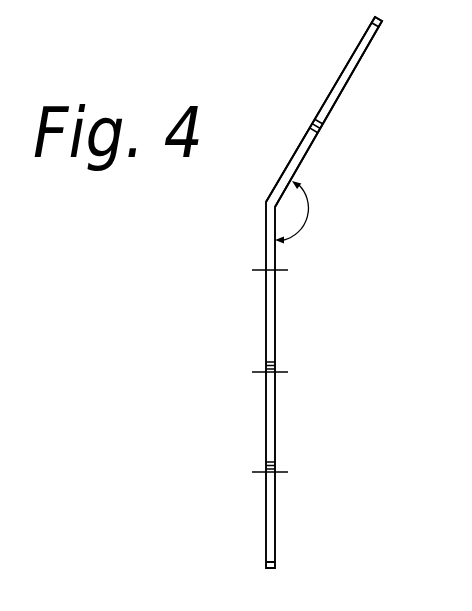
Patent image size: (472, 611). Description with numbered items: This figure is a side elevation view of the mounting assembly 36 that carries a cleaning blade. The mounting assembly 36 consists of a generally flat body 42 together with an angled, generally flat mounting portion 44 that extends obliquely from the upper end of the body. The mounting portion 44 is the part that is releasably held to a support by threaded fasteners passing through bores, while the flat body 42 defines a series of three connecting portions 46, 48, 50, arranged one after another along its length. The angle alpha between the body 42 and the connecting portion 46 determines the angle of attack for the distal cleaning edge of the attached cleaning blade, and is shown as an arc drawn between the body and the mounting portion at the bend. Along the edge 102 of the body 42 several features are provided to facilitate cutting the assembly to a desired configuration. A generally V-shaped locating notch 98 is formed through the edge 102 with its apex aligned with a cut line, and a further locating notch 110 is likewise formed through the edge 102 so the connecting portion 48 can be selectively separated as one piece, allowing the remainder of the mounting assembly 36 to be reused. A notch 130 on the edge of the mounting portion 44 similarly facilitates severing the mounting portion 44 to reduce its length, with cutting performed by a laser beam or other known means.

The mounting assembly 36 is at (333, 210).
The body 42 is at (263, 396).
The mounting portion 44 is at (314, 112).
The connecting portion 46 is at (273, 510).
The connecting portion 48 is at (270, 413).
The connecting portion 50 is at (270, 323).
The locating notch 98 is at (269, 459).
The edge 102 is at (268, 265).
The locating notch 110 is at (270, 362).
The notch 130 is at (323, 122).
The angle alpha is at (304, 193).